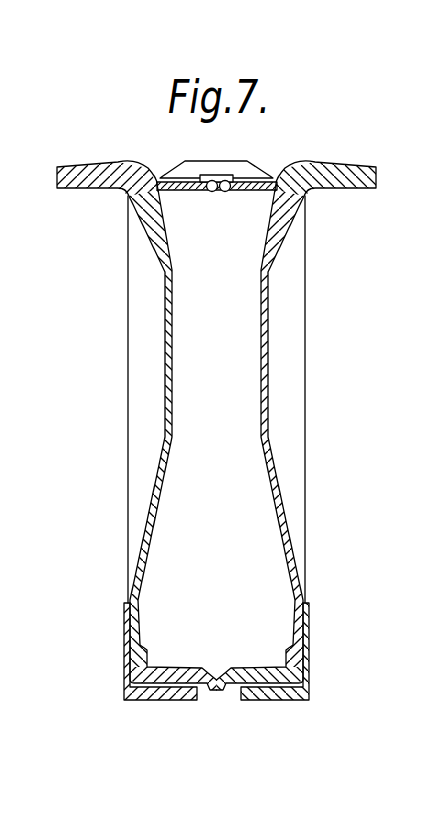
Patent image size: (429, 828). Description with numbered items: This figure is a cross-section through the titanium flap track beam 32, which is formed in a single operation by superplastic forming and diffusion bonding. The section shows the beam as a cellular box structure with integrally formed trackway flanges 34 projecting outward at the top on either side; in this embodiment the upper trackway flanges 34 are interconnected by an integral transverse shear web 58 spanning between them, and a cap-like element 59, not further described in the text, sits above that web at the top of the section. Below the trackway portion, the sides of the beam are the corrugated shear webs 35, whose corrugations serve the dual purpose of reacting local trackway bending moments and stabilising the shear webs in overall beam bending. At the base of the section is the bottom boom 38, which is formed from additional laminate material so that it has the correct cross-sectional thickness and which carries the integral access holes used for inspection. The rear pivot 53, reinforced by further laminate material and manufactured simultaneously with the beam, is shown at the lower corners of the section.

The flap track beam 32 is at (270, 375).
The trackway flanges 34 is at (83, 190).
The corrugated shear webs 35 is at (165, 373).
The bottom boom 38 is at (172, 684).
The rear pivot 53 is at (124, 655).
The integral transverse shear web 58 is at (253, 190).
The cap 59 is at (247, 160).